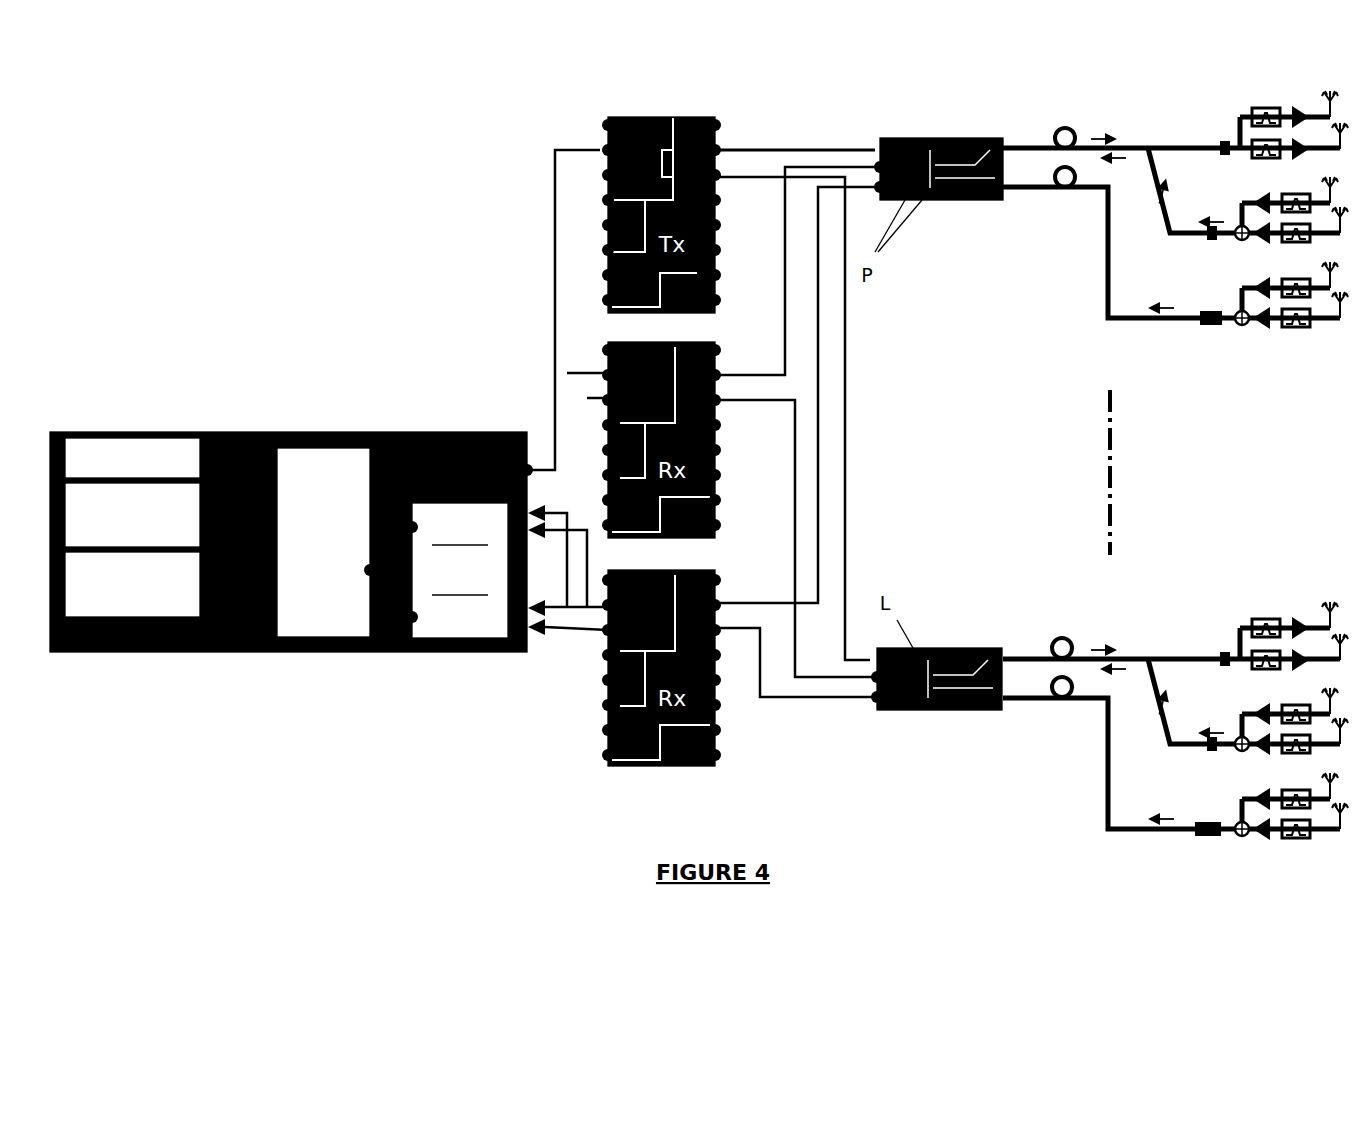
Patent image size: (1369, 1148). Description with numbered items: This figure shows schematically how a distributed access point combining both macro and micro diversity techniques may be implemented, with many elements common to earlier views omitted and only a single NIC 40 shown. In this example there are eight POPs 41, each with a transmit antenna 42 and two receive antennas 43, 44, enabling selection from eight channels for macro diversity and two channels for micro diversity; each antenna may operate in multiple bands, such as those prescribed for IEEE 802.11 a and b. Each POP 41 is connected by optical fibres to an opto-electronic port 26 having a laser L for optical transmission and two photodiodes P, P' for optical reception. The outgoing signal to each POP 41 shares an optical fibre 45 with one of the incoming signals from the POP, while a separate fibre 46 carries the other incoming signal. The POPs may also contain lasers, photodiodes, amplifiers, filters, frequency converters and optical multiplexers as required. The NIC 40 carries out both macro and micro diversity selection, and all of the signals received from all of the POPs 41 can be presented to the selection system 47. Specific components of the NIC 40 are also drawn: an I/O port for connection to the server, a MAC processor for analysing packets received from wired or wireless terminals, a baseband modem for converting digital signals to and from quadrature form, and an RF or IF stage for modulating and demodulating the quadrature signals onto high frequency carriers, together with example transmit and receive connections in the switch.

The opto-electronic port 26 is at (893, 138).
The NIC 40 is at (306, 655).
The POP 41 is at (1145, 260).
The transmit antenna 42 is at (1310, 107).
The receive antenna 43 is at (1313, 243).
The receive antenna 44 is at (1338, 313).
The optical fibre 45 is at (1055, 128).
The optical fibre 46 is at (1062, 190).
The selection system 47 is at (447, 655).